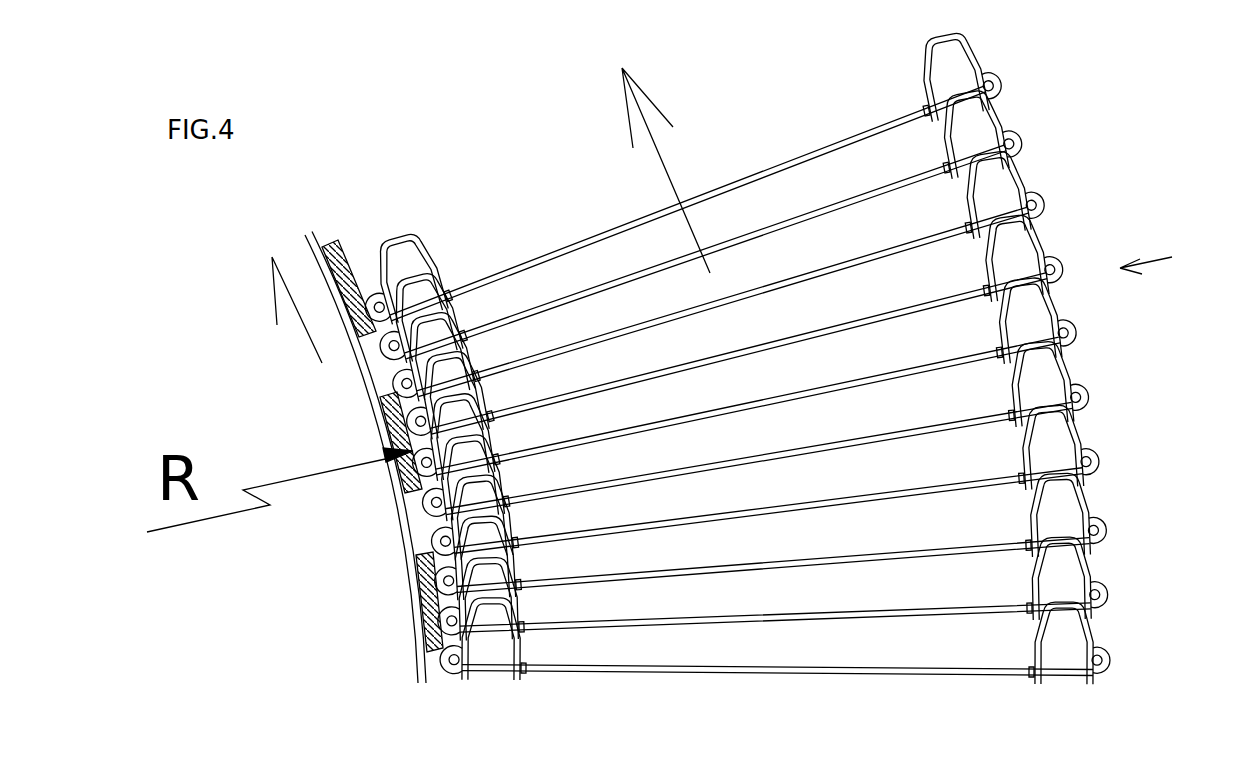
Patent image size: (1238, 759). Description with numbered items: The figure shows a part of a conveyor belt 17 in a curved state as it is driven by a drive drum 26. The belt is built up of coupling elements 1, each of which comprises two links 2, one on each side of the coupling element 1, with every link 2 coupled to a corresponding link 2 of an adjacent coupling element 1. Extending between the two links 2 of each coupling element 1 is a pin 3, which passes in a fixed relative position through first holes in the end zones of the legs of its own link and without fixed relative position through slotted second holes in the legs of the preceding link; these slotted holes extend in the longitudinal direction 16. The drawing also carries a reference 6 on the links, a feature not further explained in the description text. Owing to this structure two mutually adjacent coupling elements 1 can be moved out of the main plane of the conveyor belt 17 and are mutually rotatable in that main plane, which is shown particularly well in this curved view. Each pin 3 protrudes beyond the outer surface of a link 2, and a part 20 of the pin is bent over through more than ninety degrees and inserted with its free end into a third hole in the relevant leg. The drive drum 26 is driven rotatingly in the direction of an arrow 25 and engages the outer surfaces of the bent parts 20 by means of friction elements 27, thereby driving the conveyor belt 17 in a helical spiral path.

The coupling element 1 is at (675, 288).
The link 2 is at (1040, 230).
The pin 3 is at (902, 495).
The clip head 6 is at (927, 36).
The longitudinal direction 16 is at (673, 157).
The conveyor belt 17 is at (1169, 255).
The bent part 20 is at (440, 580).
The arrow 25 is at (302, 350).
The drive drum 26 is at (317, 238).
The friction element 27 is at (428, 620).